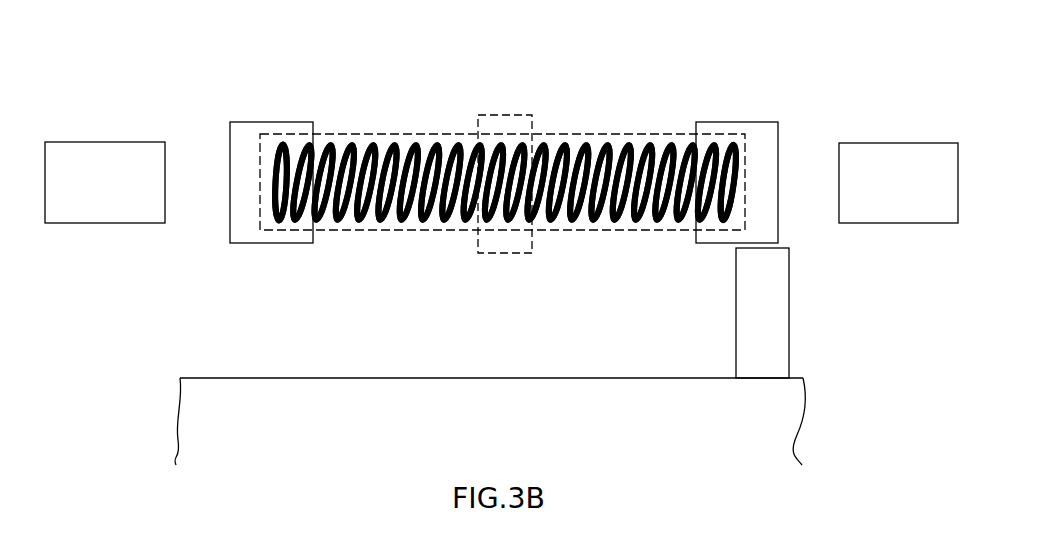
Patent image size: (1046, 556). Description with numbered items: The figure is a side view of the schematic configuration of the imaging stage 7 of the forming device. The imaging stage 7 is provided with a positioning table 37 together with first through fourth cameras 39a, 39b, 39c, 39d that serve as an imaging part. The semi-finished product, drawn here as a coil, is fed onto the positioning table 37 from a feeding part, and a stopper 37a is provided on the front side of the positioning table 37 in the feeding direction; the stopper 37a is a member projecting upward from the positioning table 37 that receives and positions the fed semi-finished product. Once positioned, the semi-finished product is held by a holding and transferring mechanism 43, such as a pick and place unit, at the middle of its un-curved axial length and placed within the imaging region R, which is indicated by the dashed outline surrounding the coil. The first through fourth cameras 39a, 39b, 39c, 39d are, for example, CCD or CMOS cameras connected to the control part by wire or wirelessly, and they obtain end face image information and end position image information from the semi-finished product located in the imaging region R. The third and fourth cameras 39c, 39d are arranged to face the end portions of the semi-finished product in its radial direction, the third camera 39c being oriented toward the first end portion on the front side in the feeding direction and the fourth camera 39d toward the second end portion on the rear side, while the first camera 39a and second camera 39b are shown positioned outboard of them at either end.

The imaging stage 7 is at (615, 96).
The imaging region R is at (385, 133).
The holding and transferring mechanism 43 is at (490, 113).
The 1st camera 39a is at (903, 142).
The 2nd camera 39b is at (118, 141).
The 3rd camera 39c is at (748, 122).
The 4th camera 39d is at (300, 122).
The positioning table 37 is at (563, 378).
The stopper 37a is at (789, 336).